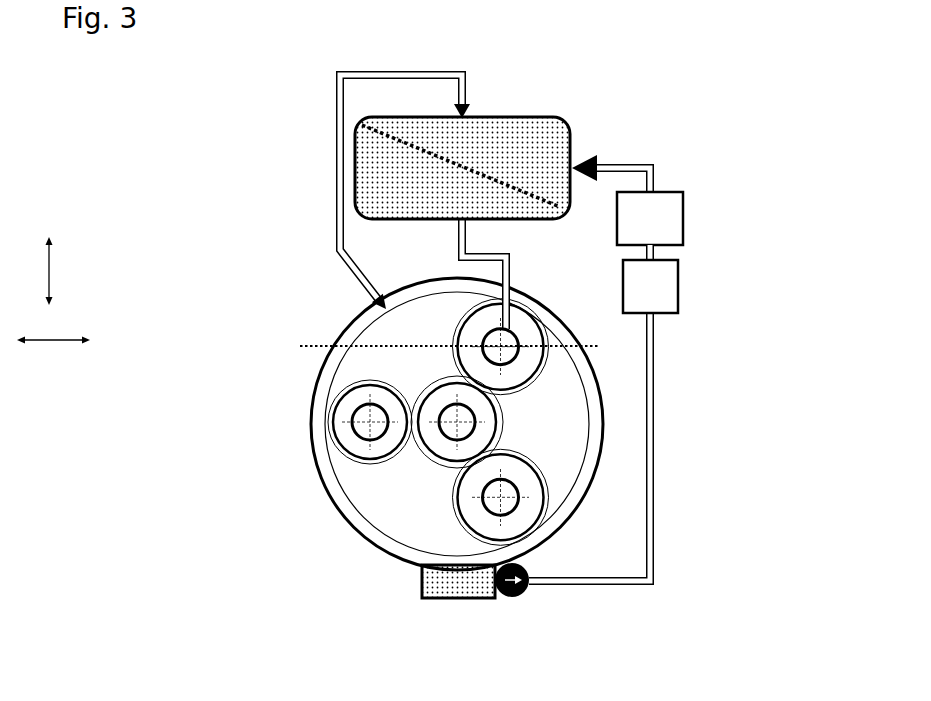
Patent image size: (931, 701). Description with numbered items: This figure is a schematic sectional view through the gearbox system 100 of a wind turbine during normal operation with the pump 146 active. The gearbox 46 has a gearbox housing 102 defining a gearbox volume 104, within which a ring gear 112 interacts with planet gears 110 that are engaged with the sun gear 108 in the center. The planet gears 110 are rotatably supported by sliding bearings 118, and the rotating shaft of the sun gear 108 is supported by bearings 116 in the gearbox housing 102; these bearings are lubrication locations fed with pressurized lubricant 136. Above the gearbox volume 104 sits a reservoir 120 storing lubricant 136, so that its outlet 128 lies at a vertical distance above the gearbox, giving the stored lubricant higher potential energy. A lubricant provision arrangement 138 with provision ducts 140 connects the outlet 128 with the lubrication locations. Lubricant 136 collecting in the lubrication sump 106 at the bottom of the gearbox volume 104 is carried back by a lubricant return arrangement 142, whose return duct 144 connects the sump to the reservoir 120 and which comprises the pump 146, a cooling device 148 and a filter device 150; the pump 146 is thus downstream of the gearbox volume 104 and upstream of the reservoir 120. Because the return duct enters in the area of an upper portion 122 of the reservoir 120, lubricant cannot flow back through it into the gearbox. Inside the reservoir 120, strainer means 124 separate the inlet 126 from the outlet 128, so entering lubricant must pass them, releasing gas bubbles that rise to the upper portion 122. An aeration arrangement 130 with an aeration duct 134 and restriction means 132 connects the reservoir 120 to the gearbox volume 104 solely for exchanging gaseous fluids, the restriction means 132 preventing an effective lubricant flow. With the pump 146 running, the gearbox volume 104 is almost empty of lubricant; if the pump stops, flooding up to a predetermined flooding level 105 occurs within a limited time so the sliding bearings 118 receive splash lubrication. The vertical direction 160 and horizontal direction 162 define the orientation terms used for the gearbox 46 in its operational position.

The gearbox 46 is at (166, 444).
The gearbox system 100 is at (134, 183).
The gearbox housing 102 is at (328, 485).
The gearbox volume 104 is at (426, 374).
The flooding level 105 is at (300, 345).
The lubrication sump 106 is at (458, 600).
The sun gear 108 is at (447, 452).
The planet gears 110 is at (350, 445).
The ring gear 112 is at (393, 542).
The bearings 116 is at (437, 437).
The sliding bearings 118 is at (352, 425).
The reservoir 120 is at (423, 186).
The upper portion 122 is at (514, 123).
The strainer means 124 is at (472, 170).
The inlet 126 is at (596, 160).
The outlet 128 is at (467, 223).
The aeration arrangement 130 is at (264, 202).
The restriction means 132 is at (357, 277).
The aeration duct 134 is at (336, 162).
The lubricant 136 is at (447, 580).
The lubricant provision arrangement 138 is at (524, 272).
The provision ducts 140 is at (458, 243).
The lubricant return arrangement 142 is at (793, 345).
The return duct 144 is at (656, 553).
The pump 146 is at (517, 600).
The cooling device 148 is at (668, 232).
The filter device 150 is at (670, 299).
The vertical direction 160 is at (50, 272).
The horizontal direction 162 is at (53, 342).